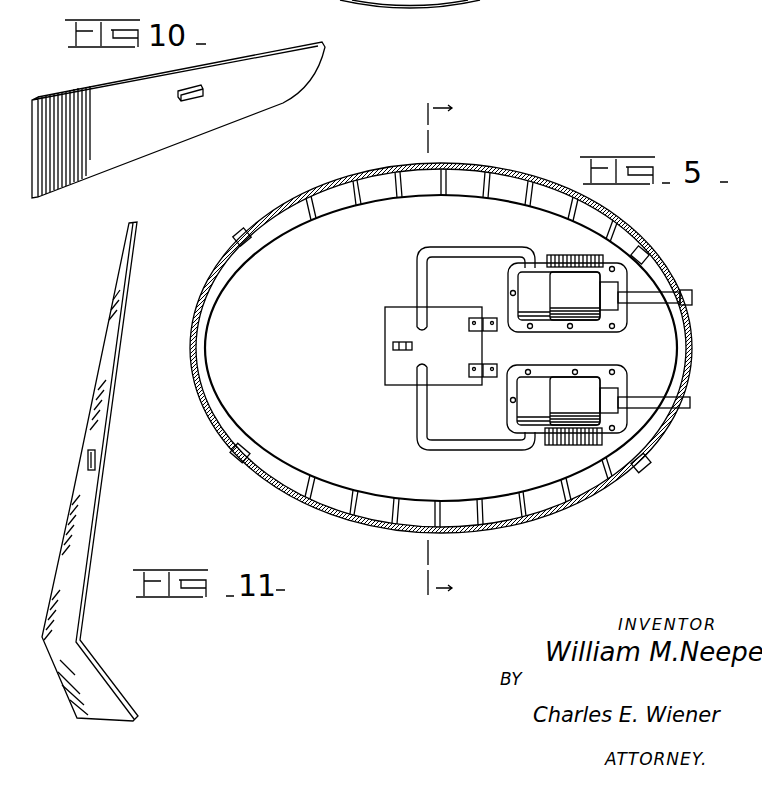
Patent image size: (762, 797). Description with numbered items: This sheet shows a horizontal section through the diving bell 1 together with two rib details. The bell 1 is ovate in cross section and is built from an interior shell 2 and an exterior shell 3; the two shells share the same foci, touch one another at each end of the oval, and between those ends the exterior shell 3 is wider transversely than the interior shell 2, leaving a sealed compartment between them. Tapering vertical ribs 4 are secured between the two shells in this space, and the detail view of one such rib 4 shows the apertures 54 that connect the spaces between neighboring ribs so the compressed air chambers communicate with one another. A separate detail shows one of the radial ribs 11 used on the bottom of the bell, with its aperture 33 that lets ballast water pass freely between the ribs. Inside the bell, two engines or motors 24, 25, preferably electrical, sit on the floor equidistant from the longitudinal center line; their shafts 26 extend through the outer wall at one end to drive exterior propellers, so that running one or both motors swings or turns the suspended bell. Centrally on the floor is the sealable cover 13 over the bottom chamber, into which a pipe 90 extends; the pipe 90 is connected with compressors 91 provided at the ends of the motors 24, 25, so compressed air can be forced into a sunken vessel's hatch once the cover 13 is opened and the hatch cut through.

In FIG. 5, the bell 1 is at (441, 348).
In FIG. 5, the interior shell 2 is at (384, 200).
In FIG. 5, the exterior shell 3 is at (428, 164).
In FIG. 11, the tapering ribs 4 is at (100, 493).
In FIG. 5, the tapering ribs 4 is at (425, 505).
In FIG. 10, the radial ribs 11 is at (178, 120).
In FIG. 5, the cover 13 is at (441, 346).
In FIG. 5, the engine or motor 24 is at (567, 411).
In FIG. 5, the engine or motor 25 is at (568, 287).
In FIG. 5, the shafts 26 is at (646, 304).
In FIG. 10, the apertures 33 is at (203, 95).
In FIG. 11, the apertures 54 is at (88, 458).
In FIG. 5, the pipe 90 is at (437, 448).
In FIG. 5, the compressors 91 is at (567, 348).